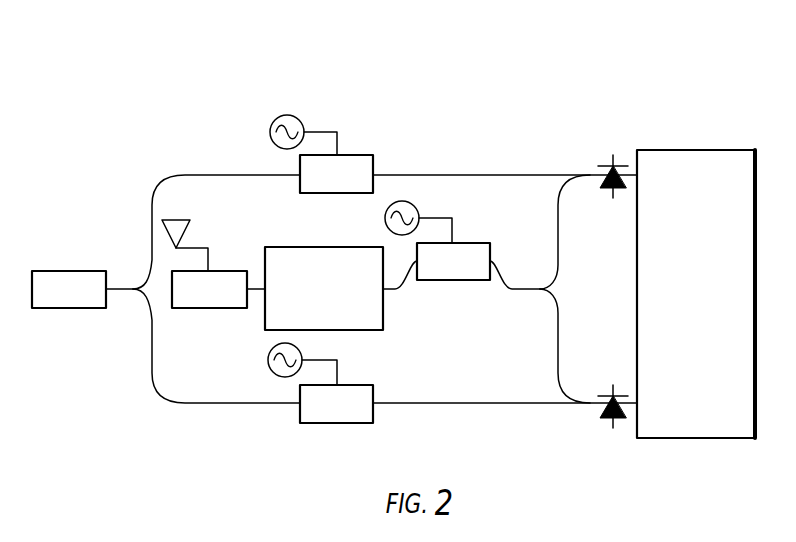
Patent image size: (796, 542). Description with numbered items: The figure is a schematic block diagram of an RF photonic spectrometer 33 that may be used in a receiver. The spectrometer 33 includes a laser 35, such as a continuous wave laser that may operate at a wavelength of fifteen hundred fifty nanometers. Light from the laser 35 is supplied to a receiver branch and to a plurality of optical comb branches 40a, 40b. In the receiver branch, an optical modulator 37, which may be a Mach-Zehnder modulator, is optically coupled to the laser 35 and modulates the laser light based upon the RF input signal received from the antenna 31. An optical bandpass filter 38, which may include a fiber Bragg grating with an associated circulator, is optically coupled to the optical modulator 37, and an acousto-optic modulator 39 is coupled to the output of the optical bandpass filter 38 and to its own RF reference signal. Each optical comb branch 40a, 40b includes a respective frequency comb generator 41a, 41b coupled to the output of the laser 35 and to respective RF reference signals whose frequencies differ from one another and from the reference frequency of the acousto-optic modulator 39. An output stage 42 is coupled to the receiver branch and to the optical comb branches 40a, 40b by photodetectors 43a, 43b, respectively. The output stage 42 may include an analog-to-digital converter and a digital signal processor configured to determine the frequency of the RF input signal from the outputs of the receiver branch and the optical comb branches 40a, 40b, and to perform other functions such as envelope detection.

The antenna 31 is at (178, 220).
The RF photonic spectrometer 33 is at (680, 74).
The laser 35 is at (60, 271).
The optical modulator 37 is at (236, 271).
The optical bandpass filter 38 is at (383, 313).
The acousto-optic modulator 39 is at (478, 243).
The optical comb branch 40a is at (178, 157).
The optical comb branch 40b is at (188, 420).
The frequency comb generator 41a is at (362, 155).
The frequency comb generator 41b is at (322, 423).
The output stage 42 is at (706, 150).
The photodetector 43a is at (610, 161).
The photodetector 43b is at (609, 425).